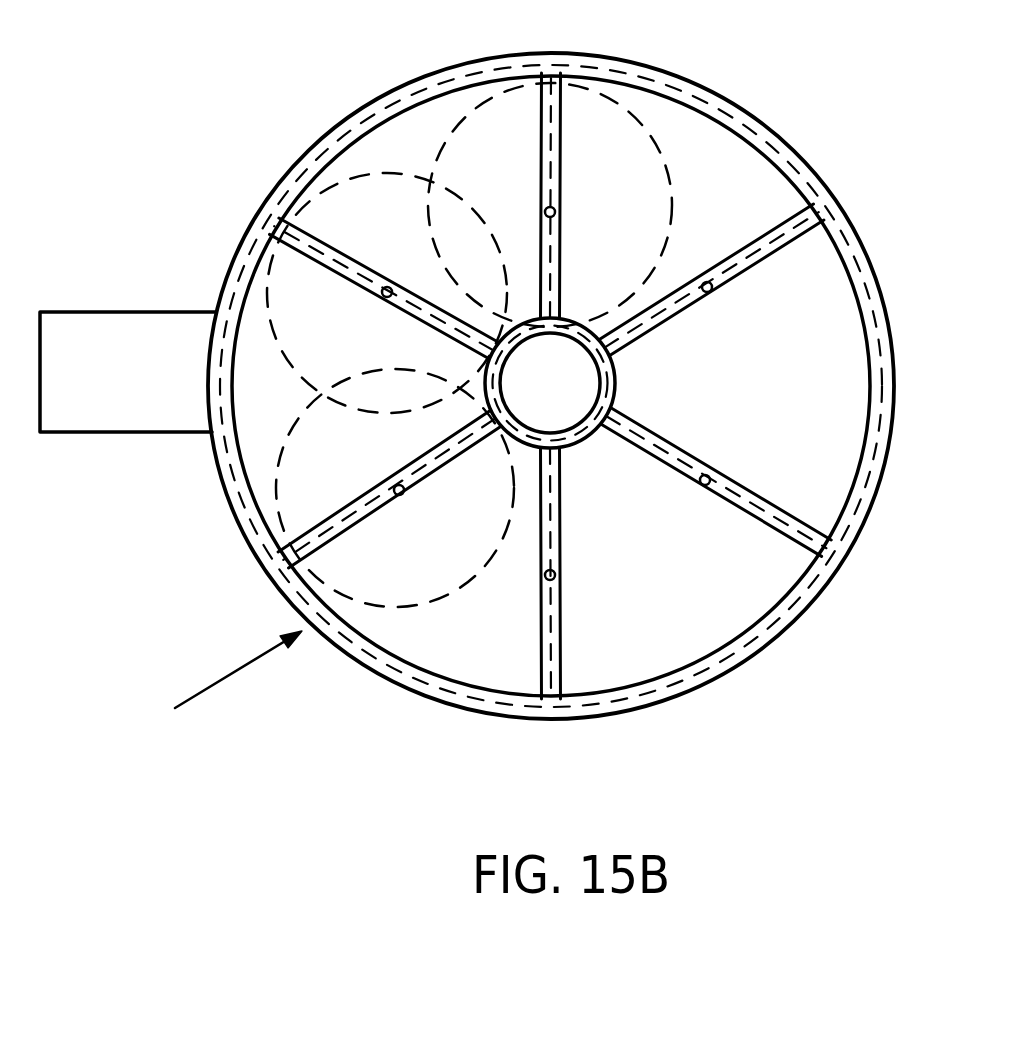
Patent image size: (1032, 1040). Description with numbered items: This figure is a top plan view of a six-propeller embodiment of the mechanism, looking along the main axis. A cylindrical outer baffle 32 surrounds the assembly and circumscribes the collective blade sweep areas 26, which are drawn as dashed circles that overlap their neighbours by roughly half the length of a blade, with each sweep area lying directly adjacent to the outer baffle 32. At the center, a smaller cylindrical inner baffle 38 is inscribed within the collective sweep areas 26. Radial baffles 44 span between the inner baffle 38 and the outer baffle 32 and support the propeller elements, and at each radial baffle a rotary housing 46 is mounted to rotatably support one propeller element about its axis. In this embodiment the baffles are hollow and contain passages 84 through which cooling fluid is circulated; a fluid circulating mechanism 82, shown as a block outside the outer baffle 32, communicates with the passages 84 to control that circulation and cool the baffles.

The blade sweep area 26 is at (452, 133).
The outer baffle 32 is at (310, 146).
The inner baffle 38 is at (622, 388).
The radial baffles 44 is at (560, 137).
The rotary housing 46 is at (403, 497).
The fluid circulating mechanism 82 is at (88, 405).
The passages 84 is at (806, 582).